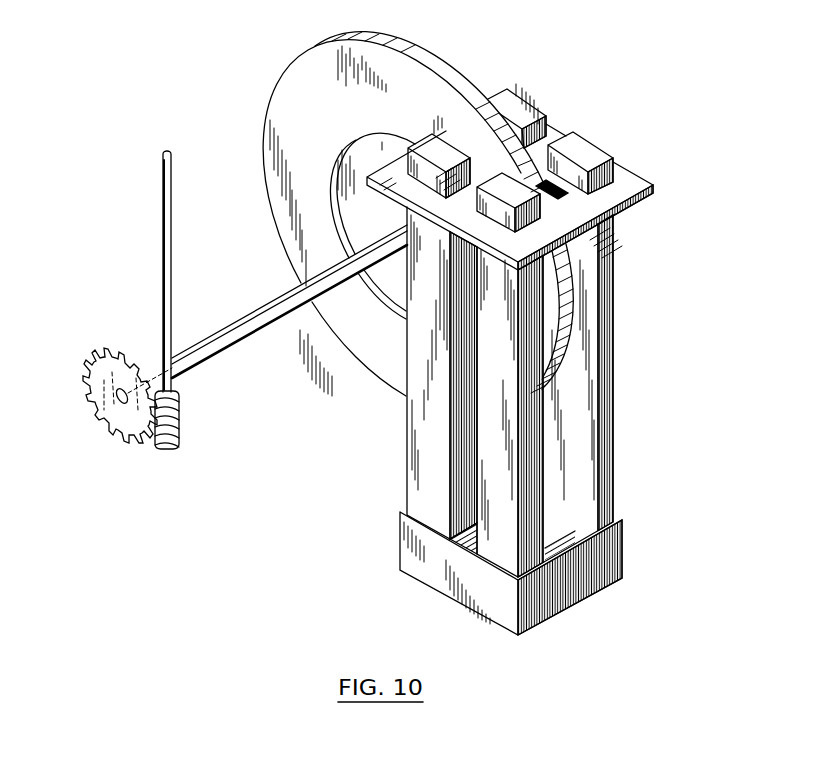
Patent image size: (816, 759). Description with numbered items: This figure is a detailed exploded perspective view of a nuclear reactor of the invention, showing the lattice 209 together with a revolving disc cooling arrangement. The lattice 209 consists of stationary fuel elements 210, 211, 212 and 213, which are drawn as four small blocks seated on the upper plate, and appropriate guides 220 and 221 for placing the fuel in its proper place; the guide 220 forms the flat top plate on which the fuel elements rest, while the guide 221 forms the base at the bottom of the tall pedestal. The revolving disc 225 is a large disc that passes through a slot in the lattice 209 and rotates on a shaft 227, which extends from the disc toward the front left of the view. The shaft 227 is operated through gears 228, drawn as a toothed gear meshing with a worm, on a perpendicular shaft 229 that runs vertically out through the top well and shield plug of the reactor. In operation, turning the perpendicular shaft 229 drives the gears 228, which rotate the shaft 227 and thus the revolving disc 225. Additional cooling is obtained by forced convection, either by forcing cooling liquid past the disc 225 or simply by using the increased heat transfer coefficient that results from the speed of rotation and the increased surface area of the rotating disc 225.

The lattice 209 is at (613, 356).
The stationary fuel element 210 is at (515, 110).
The stationary fuel element 211 is at (582, 152).
The stationary fuel element 212 is at (508, 185).
The stationary fuel element 213 is at (432, 143).
The guide 220 is at (625, 176).
The guide 221 is at (582, 597).
The revolving disc 225 is at (282, 73).
The shaft 227 is at (267, 307).
The gears 228 is at (102, 353).
The perpendicular shaft 229 is at (163, 256).